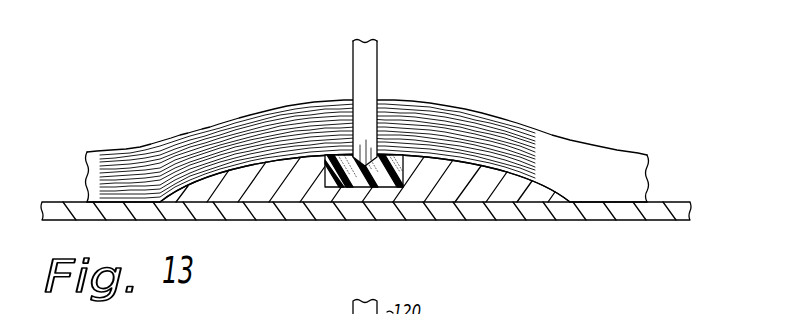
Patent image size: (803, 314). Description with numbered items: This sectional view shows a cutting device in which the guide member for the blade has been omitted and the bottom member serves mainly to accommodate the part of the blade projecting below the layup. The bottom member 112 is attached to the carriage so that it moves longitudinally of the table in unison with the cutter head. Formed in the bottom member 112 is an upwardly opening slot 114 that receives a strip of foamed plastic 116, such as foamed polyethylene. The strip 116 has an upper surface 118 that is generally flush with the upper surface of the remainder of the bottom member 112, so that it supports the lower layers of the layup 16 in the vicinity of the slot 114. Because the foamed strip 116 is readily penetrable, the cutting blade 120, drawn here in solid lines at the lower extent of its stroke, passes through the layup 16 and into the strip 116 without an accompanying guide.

The layup 16 is at (550, 157).
The bottom member 112 is at (465, 190).
The upwardly opening slot 114 is at (365, 147).
The strip of foamed plastic 116 is at (337, 188).
The upper surface 118 is at (341, 157).
The cutting blade 120 is at (368, 85).